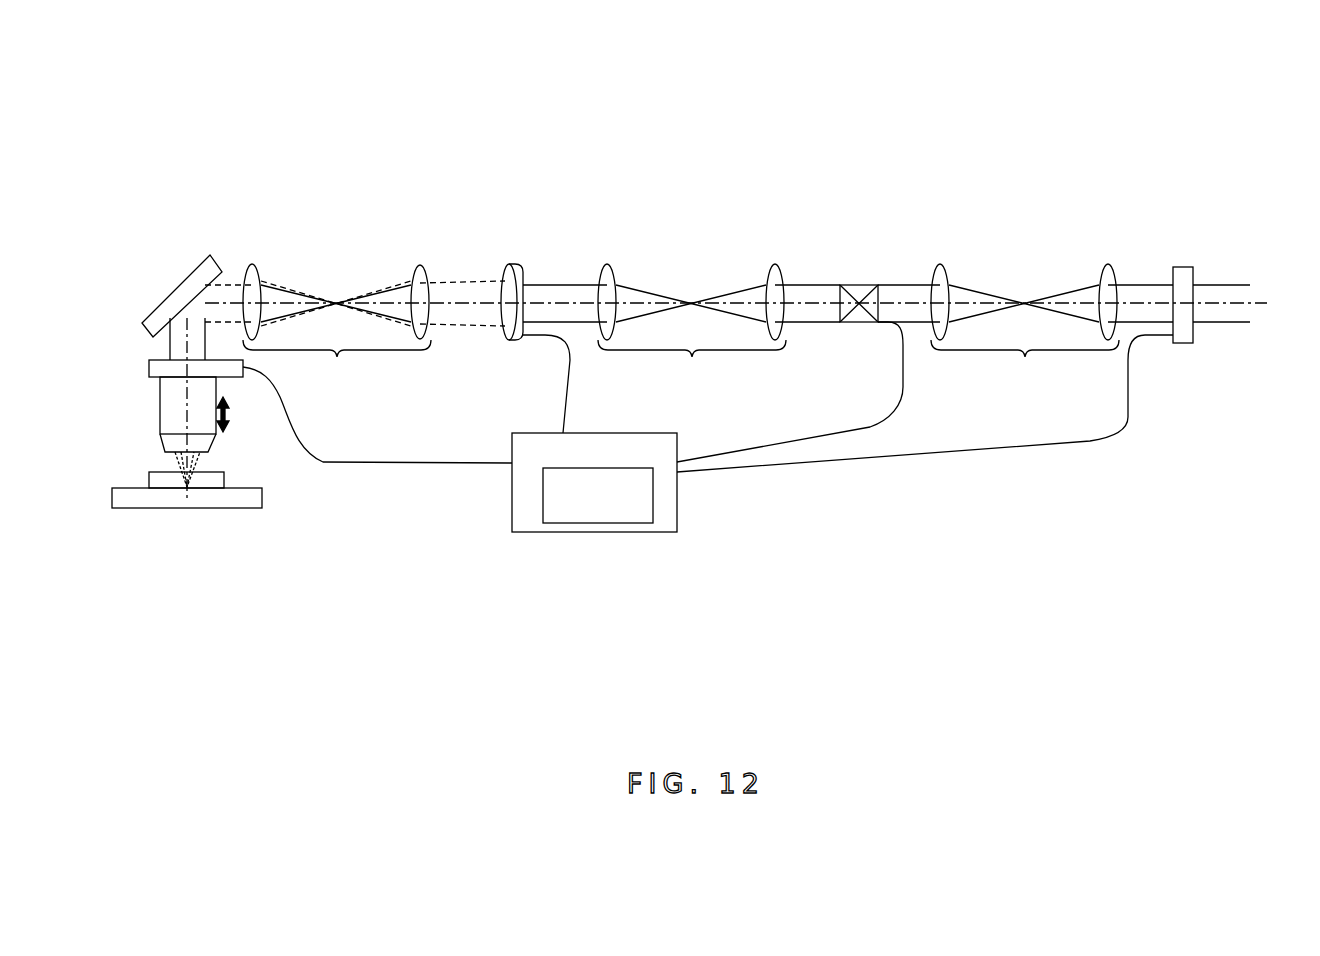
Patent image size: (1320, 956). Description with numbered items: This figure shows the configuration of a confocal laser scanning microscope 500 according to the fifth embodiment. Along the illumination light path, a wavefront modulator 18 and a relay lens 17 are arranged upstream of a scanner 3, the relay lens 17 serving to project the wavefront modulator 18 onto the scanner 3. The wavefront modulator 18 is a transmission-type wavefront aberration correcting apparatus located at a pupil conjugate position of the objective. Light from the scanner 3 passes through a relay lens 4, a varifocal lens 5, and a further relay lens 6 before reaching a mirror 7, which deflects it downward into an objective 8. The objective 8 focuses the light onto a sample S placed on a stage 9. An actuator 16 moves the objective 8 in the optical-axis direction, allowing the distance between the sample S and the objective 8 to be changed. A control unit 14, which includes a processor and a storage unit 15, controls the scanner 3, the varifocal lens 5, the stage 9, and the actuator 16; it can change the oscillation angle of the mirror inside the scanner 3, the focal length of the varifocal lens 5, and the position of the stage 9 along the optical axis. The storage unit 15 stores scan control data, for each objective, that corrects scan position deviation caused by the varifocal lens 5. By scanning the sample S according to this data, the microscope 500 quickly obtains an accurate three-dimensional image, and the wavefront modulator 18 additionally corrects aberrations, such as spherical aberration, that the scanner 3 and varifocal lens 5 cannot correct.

The microscope 500 is at (1248, 158).
The scanner 3 is at (858, 282).
The relay lens 4 is at (692, 326).
The varifocal lens 5 is at (515, 262).
The relay lens 6 is at (337, 326).
The mirror 7 is at (178, 290).
The objective 8 is at (160, 410).
The stage 9 is at (140, 487).
The sample S is at (226, 478).
The control unit 14 is at (680, 495).
The storage unit 15 is at (583, 525).
The actuator 16 is at (152, 368).
The relay lens 17 is at (1025, 326).
The wavefront modulator 18 is at (1185, 262).